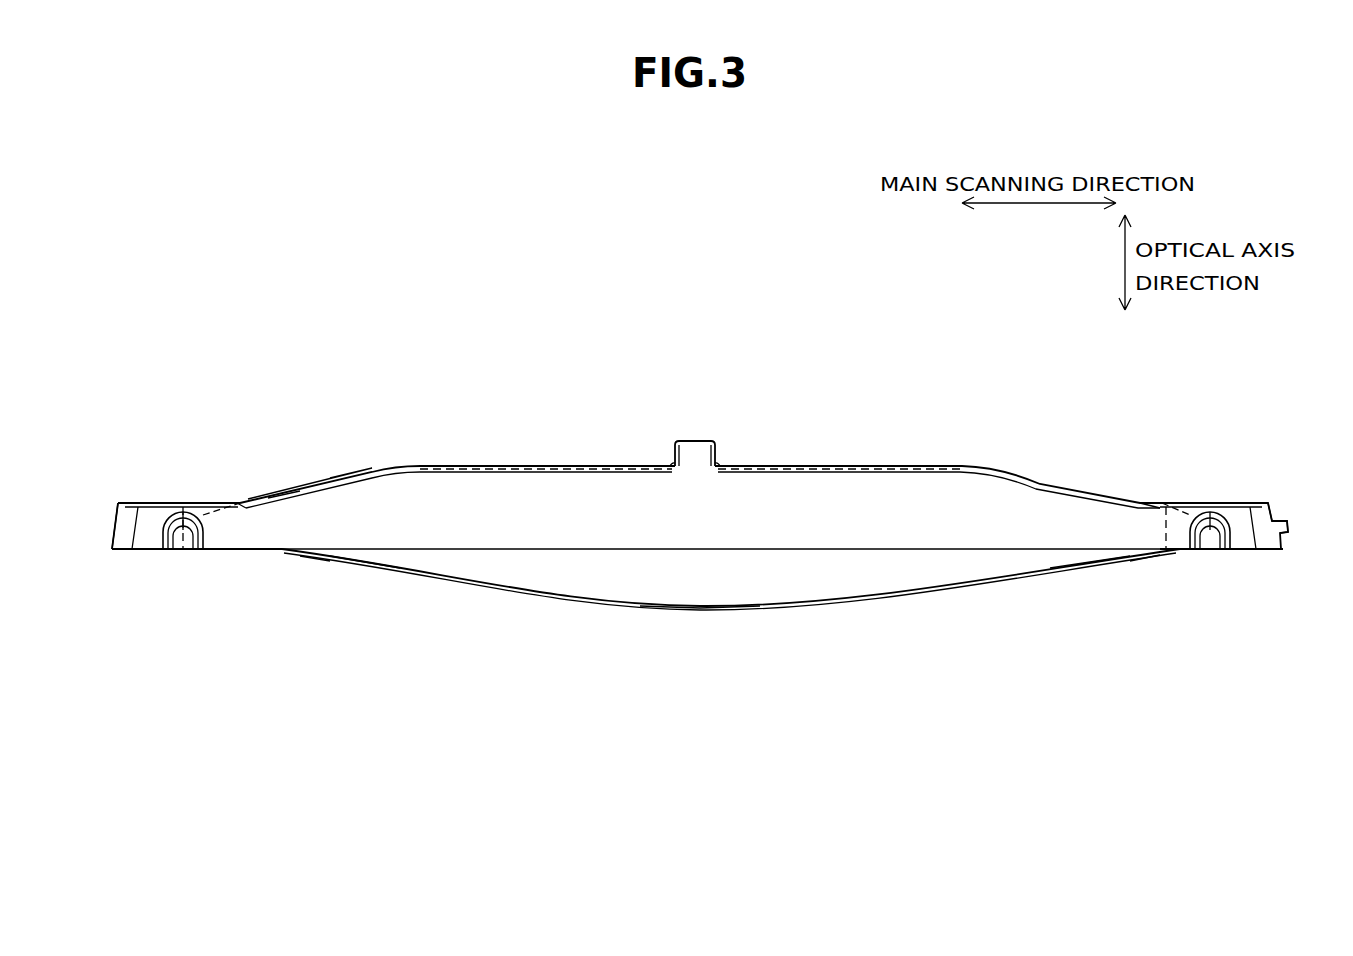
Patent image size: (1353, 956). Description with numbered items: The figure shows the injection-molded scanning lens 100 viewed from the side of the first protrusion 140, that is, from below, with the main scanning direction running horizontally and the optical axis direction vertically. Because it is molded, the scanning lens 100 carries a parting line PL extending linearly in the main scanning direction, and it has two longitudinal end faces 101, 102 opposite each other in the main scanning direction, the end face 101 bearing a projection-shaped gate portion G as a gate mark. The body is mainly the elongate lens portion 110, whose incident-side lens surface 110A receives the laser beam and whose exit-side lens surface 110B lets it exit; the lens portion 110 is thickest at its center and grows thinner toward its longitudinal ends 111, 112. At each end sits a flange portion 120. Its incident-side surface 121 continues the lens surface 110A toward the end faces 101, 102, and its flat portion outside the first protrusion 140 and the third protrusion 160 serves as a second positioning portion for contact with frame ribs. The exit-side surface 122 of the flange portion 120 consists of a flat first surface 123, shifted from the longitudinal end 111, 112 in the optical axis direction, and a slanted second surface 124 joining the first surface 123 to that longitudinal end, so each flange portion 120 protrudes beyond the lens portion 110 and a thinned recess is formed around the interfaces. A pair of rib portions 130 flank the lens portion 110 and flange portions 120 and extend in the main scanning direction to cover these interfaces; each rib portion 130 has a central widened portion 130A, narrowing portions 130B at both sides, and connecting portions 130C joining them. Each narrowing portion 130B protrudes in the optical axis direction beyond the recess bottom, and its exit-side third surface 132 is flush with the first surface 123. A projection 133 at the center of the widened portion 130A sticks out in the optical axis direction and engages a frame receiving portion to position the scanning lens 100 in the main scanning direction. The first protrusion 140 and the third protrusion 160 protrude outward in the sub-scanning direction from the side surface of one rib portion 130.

The scanning lens 100 is at (1001, 371).
The longitudinal end face 101 is at (1274, 512).
The longitudinal end face 102 is at (116, 505).
The lens portion 110 is at (944, 592).
The lens surface 110A is at (492, 590).
The lens surface 110B is at (310, 478).
The longitudinal end 111 is at (1170, 555).
The longitudinal end 112 is at (176, 560).
The flange portion 120 is at (132, 545).
The incident-side surface 121 is at (146, 553).
The exit-side surface 122 is at (225, 428).
The first surface 123 is at (138, 505).
The second surface 124 is at (183, 513).
The rib portion 130 is at (889, 456).
The widened portion 130A is at (684, 527).
The narrowing portion 130B is at (223, 540).
The connecting portion 130C is at (337, 530).
The third surface 132 is at (230, 500).
The projection 133 is at (700, 455).
The first protrusion 140 is at (196, 550).
The third protrusion 160 is at (1212, 555).
The gate portion G is at (1289, 540).
The parting line PL is at (851, 550).